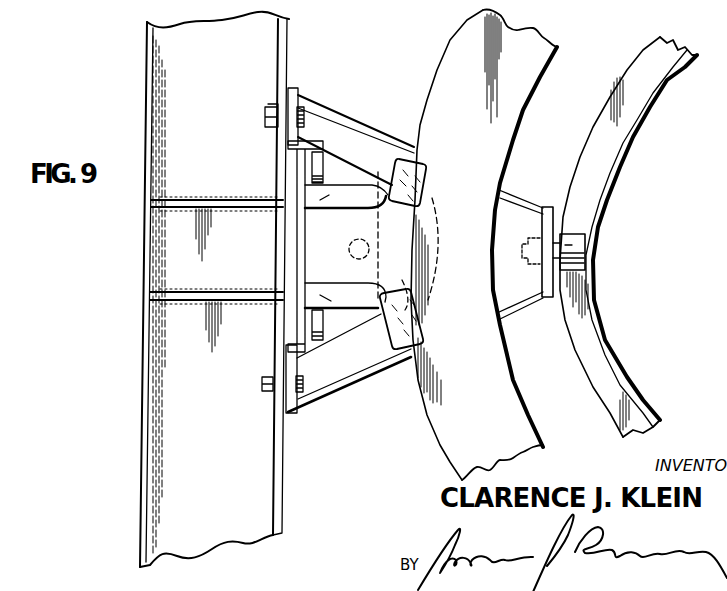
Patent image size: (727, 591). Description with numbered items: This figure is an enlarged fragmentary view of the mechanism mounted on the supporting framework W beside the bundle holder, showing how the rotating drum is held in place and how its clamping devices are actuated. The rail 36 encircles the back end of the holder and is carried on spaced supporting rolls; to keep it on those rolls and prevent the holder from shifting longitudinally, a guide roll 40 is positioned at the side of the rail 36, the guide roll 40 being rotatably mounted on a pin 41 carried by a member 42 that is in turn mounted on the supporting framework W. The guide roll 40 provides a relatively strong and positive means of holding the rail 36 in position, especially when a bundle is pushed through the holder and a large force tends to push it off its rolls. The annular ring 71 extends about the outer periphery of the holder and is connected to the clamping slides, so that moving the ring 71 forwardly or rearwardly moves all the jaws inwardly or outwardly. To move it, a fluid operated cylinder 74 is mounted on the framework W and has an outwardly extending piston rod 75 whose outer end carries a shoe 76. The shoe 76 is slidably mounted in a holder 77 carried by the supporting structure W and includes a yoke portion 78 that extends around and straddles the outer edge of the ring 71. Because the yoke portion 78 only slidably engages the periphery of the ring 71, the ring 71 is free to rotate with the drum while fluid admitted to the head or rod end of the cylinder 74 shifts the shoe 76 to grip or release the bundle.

The supporting framework W is at (288, 64).
The annular ring 71 is at (436, 82).
The rail 36 is at (632, 63).
The member 42 is at (357, 383).
The shoe 76 is at (392, 163).
The holder 77 is at (330, 306).
The yoke portion 78 is at (427, 186).
The fluid operated cylinder 74 is at (371, 315).
The piston rod 75 is at (364, 242).
The pin 41 is at (549, 206).
The guide roll 40 is at (575, 236).